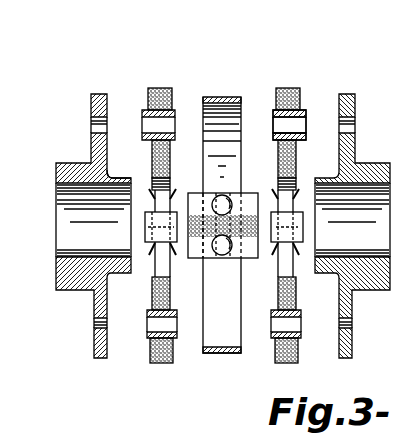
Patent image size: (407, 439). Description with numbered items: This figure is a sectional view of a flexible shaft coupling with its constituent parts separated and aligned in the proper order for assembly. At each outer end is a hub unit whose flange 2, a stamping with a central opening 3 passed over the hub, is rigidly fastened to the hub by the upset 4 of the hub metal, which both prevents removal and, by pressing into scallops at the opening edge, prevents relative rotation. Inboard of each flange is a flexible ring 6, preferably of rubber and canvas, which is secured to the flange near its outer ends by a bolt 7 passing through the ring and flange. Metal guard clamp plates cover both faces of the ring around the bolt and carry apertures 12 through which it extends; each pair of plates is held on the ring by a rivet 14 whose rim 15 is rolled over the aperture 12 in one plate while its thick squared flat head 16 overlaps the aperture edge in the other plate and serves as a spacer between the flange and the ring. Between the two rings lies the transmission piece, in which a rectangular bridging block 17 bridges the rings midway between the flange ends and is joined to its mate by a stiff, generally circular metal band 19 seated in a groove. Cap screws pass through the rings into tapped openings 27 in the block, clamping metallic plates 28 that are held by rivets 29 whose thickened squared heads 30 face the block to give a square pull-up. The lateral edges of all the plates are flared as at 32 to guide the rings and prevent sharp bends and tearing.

The flange 2 is at (91, 106).
The central opening 3 is at (100, 164).
The upset 4 is at (105, 175).
The ring 6 is at (161, 88).
The bolt 7 is at (361, 212).
The aperture 12 is at (302, 110).
The rivet 14 is at (271, 111).
The rim 15 is at (272, 115).
The squared flat head 16 is at (142, 112).
The bridging block 17 is at (246, 258).
The metal band 19 is at (212, 96).
The tapped opening 27 is at (203, 235).
The metallic plate 28 is at (160, 228).
The rivet 29 is at (163, 215).
The thickened squared head 30 is at (173, 244).
The flare 32 is at (172, 195).